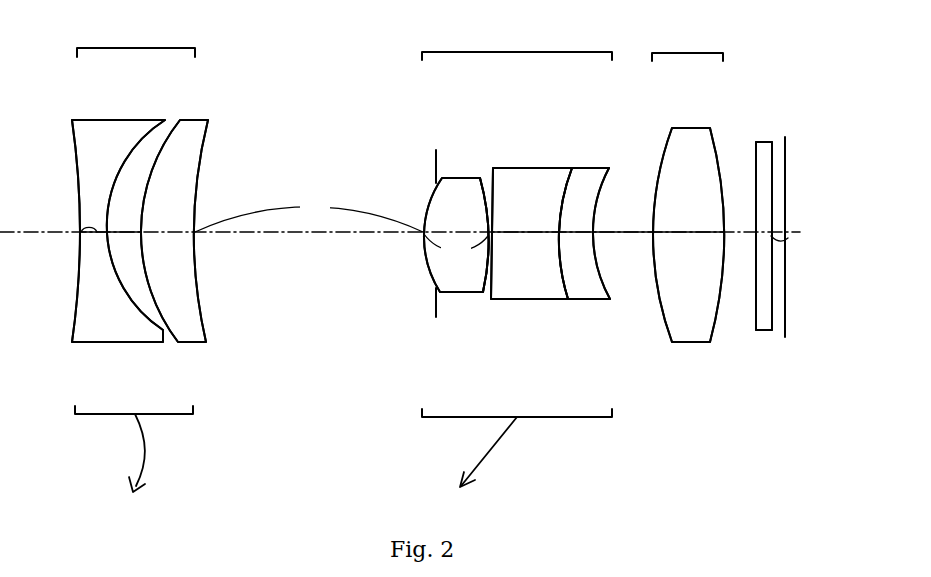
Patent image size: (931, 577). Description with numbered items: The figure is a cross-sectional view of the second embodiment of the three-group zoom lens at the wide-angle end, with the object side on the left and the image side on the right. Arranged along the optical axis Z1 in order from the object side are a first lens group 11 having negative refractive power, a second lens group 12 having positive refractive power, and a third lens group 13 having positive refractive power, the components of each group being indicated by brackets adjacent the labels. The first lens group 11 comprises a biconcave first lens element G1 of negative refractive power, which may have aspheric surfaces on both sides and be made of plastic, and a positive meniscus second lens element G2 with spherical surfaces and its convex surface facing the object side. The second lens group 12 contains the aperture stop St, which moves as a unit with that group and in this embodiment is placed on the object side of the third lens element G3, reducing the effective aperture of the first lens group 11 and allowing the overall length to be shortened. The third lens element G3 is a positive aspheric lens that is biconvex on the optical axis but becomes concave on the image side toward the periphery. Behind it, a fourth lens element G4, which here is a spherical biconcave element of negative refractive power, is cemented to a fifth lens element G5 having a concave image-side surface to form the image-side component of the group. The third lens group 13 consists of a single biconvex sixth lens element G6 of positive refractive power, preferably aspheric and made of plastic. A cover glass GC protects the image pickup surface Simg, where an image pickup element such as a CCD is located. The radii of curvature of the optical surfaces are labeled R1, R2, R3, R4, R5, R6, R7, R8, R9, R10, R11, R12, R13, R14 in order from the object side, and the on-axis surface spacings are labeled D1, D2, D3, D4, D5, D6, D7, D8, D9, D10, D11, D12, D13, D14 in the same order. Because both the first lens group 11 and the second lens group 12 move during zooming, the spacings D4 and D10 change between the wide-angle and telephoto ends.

The first lens group 11 is at (135, 258).
The second lens group 12 is at (520, 256).
The third lens group 13 is at (691, 205).
The first lens element G1 is at (110, 118).
The second lens element G2 is at (188, 118).
The third lens element G3 is at (462, 177).
The fourth lens element G4 is at (535, 168).
The fifth lens element G5 is at (590, 168).
The sixth lens element G6 is at (686, 129).
The cover glass GC is at (764, 142).
The image pickup surface Simg is at (786, 145).
The aperture stop St is at (436, 150).
The optical axis Z1 is at (27, 236).
The radius of curvature of the first optical surface R1 is at (72, 342).
The radius of curvature of the second optical surface R2 is at (118, 278).
The radius of curvature of the third optical surface R3 is at (156, 309).
The radius of curvature of the fourth optical surface R4 is at (206, 314).
The radius of curvature of the fifth optical surface R5 is at (436, 317).
The radius of curvature of the sixth optical surface R6 is at (426, 262).
The radius of curvature of the seventh optical surface R7 is at (480, 292).
The radius of curvature of the eighth optical surface R8 is at (493, 302).
The radius of curvature of the ninth optical surface R9 is at (560, 278).
The radius of curvature of the tenth optical surface R10 is at (605, 300).
The radius of curvature of the eleventh optical surface R11 is at (673, 340).
The radius of curvature of the twelfth optical surface R12 is at (712, 340).
The radius of curvature of the thirteenth optical surface R13 is at (756, 312).
The radius of curvature of the fourteenth optical surface R14 is at (772, 330).
The on-axis surface spacing D1 is at (79, 231).
The on-axis surface spacing D2 is at (109, 218).
The on-axis surface spacing D3 is at (143, 218).
The on-axis surface spacing D4 is at (309, 214).
The on-axis surface spacing D5 is at (423, 228).
The on-axis surface spacing D6 is at (456, 249).
The on-axis surface spacing D7 is at (478, 178).
The on-axis surface spacing D8 is at (525, 224).
The on-axis surface spacing D9 is at (576, 224).
The on-axis surface spacing D10 is at (623, 224).
The on-axis surface spacing D11 is at (688, 224).
The on-axis surface spacing D12 is at (745, 231).
The on-axis surface spacing D13 is at (791, 240).
The on-axis surface spacing D14 is at (796, 232).